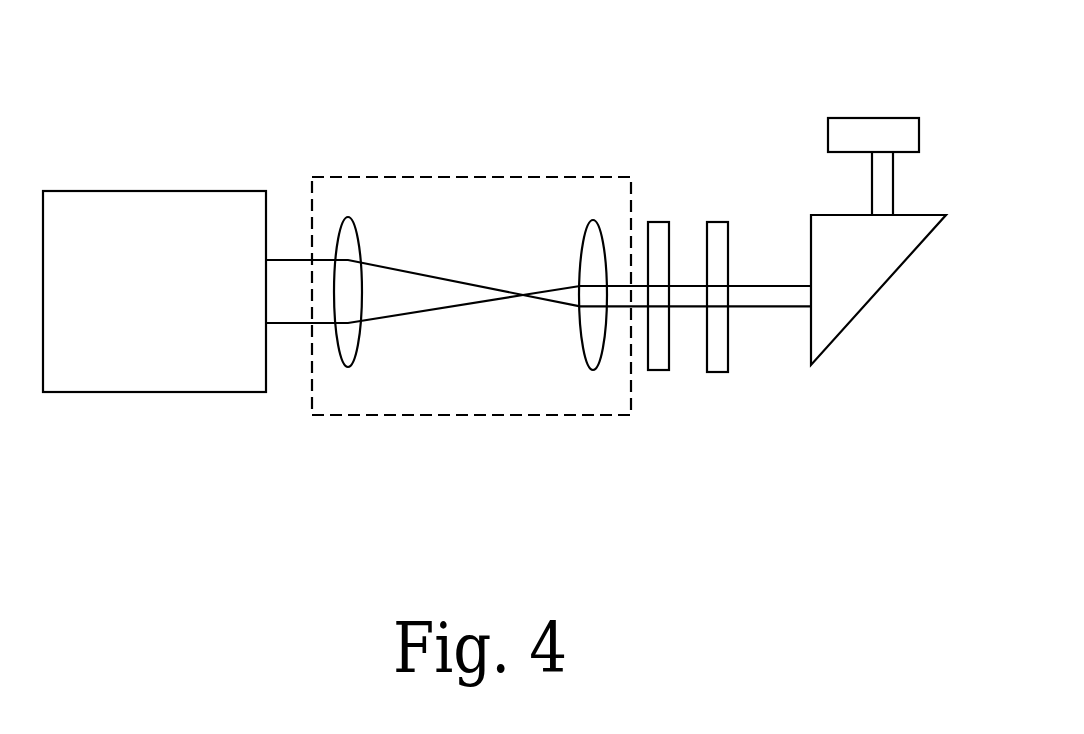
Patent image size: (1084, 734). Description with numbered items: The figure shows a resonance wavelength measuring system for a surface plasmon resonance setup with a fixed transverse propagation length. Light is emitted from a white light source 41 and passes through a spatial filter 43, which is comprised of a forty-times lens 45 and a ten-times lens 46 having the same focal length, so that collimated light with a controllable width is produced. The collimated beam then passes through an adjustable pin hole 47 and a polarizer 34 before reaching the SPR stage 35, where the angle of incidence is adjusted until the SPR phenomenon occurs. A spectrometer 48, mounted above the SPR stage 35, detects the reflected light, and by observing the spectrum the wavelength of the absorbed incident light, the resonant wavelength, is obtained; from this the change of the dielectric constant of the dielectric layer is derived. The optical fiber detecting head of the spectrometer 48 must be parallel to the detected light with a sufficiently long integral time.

The white light source 41 is at (162, 203).
The spatial filter 43 is at (505, 177).
The 40x lens 45 is at (348, 227).
The 10x lens 46 is at (592, 232).
The adjustable pin hole 47 is at (651, 388).
The polarizer 34 is at (720, 388).
The SPR stage 35 is at (870, 283).
The spectrometer 48 is at (882, 128).